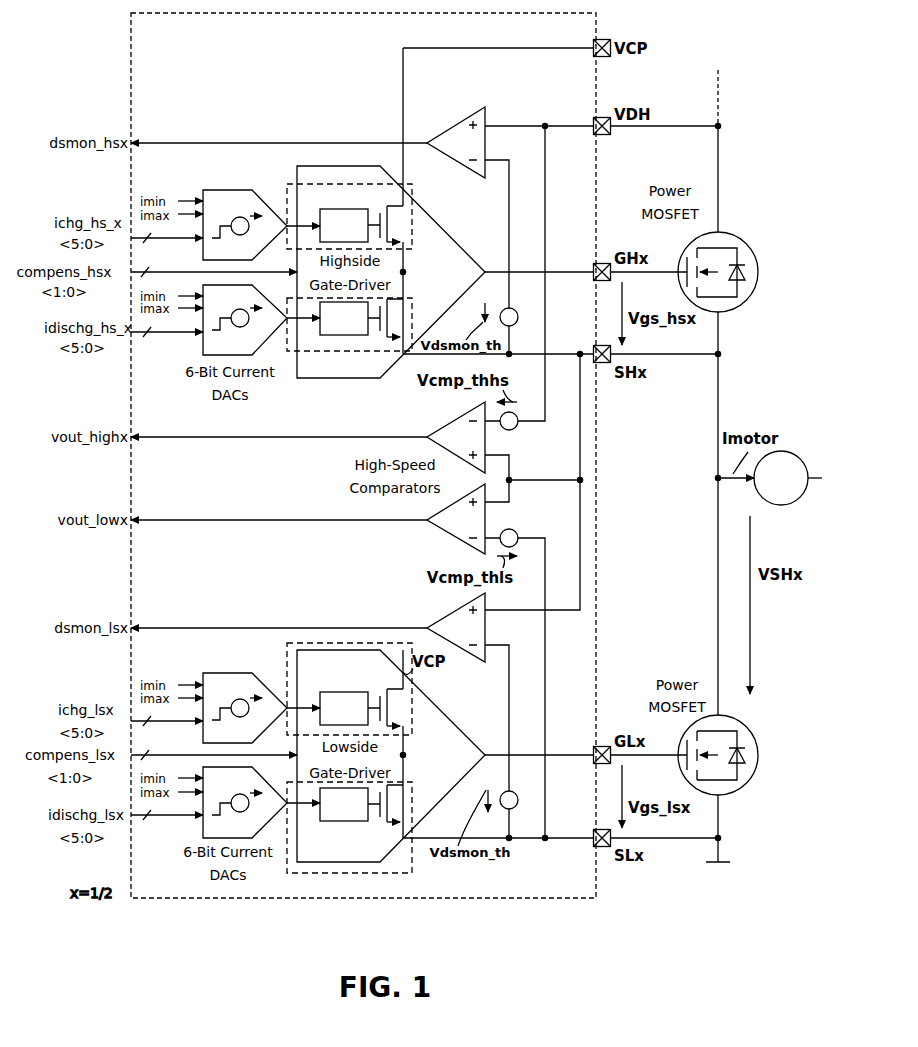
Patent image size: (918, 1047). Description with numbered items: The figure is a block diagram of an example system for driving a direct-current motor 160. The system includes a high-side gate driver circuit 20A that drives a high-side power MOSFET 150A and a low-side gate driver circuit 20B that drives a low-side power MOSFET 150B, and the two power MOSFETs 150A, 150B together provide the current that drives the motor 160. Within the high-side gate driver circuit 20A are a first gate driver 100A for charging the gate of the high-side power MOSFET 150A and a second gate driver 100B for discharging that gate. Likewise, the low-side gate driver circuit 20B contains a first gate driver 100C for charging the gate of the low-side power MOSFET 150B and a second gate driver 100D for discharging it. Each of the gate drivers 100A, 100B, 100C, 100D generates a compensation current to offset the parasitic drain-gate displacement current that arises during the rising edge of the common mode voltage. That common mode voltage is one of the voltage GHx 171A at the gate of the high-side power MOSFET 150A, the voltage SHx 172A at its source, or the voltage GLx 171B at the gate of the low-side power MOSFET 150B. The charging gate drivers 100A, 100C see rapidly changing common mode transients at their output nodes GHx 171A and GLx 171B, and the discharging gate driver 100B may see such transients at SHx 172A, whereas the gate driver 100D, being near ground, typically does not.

The high-side gate driver circuit 20A is at (389, 234).
The low-side gate driver circuit 20B is at (379, 777).
The first gate driver 100A is at (368, 184).
The second gate driver 100B is at (368, 351).
The first gate driver 100C is at (335, 643).
The second gate driver 100D is at (368, 873).
The high-side power MOSFET 150A is at (738, 238).
The low-side power MOSFET 150B is at (752, 778).
The direct-current motor 160 is at (800, 453).
The voltage GHx 171A is at (595, 265).
The voltage SHx 172A is at (604, 365).
The voltage GLx 171B is at (600, 746).